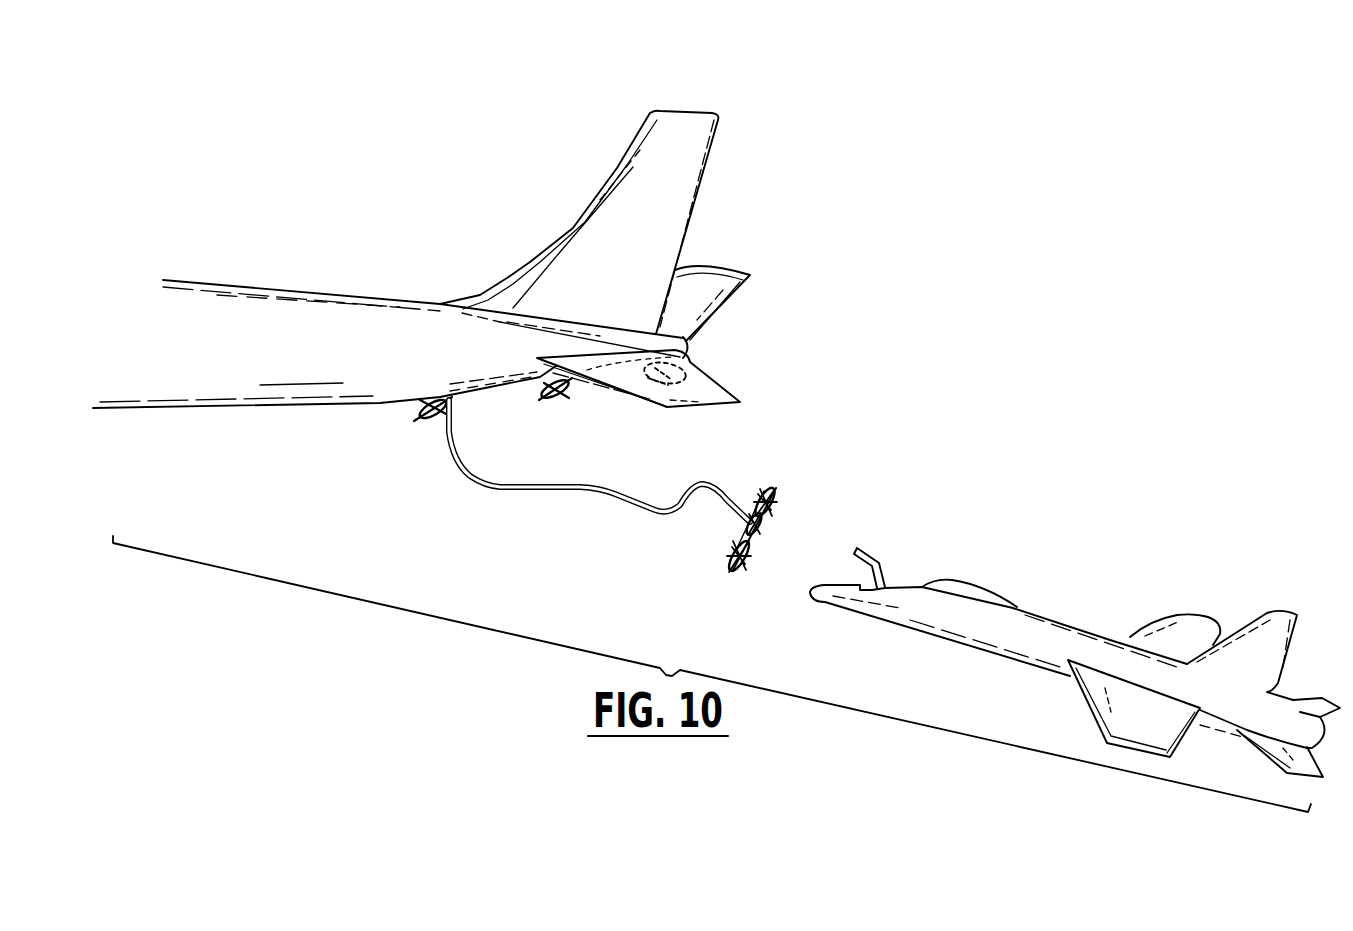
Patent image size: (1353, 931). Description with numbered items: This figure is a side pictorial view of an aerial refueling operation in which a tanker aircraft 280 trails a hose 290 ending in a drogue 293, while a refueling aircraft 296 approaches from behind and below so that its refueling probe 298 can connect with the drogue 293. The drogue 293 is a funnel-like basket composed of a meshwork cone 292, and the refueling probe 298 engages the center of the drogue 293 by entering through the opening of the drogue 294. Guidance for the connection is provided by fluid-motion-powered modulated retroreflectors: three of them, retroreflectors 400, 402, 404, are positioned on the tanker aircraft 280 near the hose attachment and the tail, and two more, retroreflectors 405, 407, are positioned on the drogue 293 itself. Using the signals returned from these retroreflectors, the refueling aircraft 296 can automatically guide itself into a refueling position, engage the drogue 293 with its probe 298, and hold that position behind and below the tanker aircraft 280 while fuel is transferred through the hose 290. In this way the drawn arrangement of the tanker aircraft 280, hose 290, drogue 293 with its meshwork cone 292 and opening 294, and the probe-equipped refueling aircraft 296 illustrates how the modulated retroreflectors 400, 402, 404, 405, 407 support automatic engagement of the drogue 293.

The tanker aircraft 280 is at (377, 293).
The hose 290 is at (708, 482).
The meshwork cone 292 is at (751, 513).
The drogue 293 is at (792, 530).
The opening of the drogue 294 is at (766, 530).
The refueling aircraft 296 is at (1090, 627).
The refueling probe 298 is at (885, 572).
The fluid-motion-powered modulated retroreflector 400 is at (415, 420).
The fluid-motion-powered modulated retroreflector 402 is at (577, 381).
The fluid-motion-powered modulated retroreflector 404 is at (692, 356).
The fluid motion powered modulated retroreflector 405 is at (778, 490).
The fluid motion powered modulated retroreflector 407 is at (733, 548).